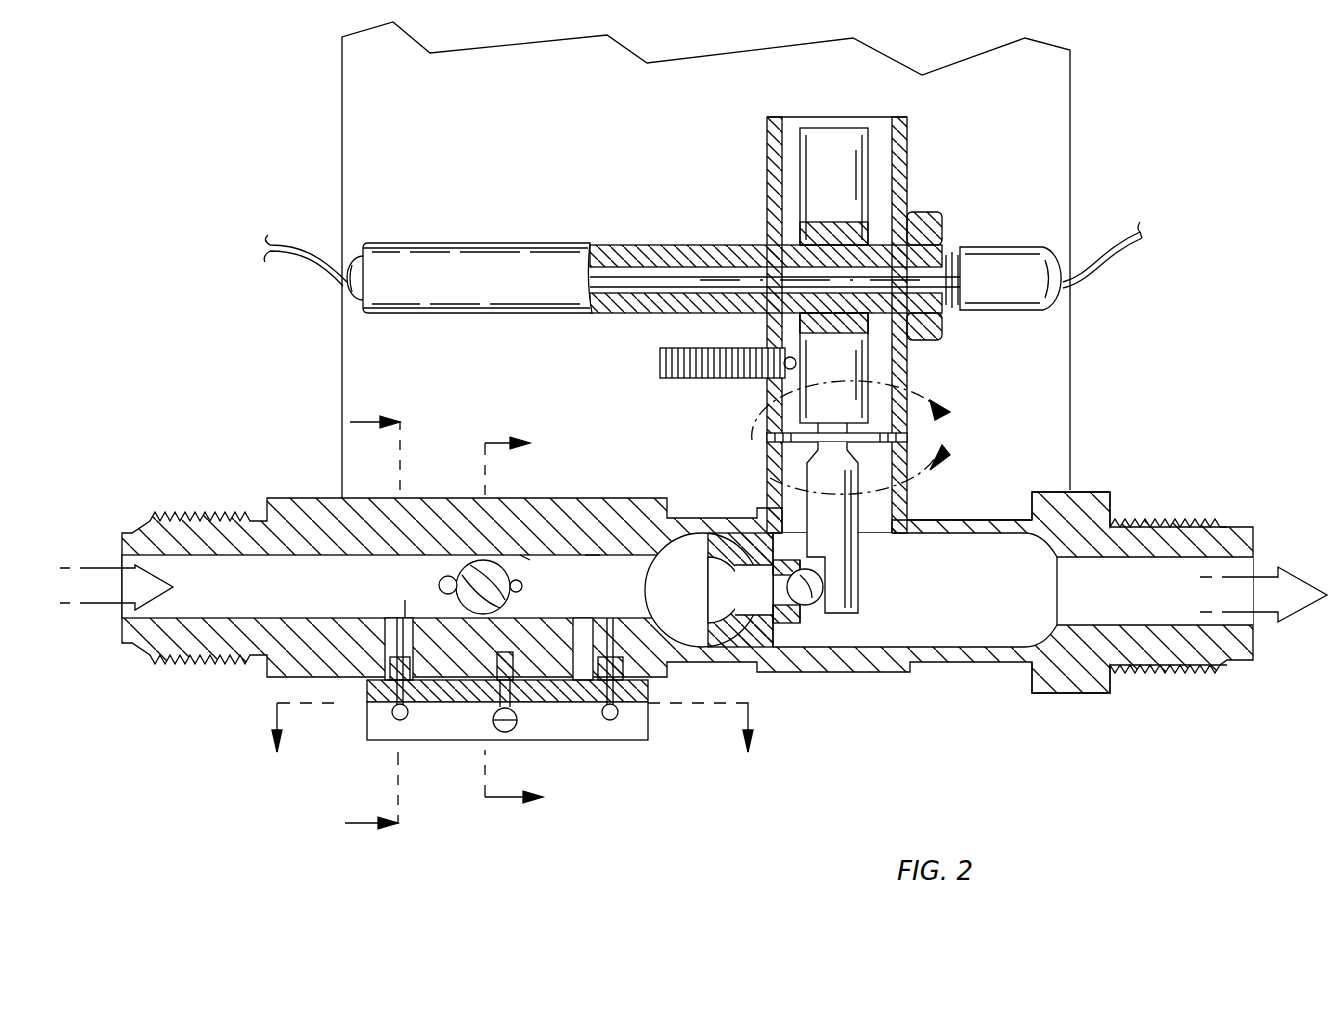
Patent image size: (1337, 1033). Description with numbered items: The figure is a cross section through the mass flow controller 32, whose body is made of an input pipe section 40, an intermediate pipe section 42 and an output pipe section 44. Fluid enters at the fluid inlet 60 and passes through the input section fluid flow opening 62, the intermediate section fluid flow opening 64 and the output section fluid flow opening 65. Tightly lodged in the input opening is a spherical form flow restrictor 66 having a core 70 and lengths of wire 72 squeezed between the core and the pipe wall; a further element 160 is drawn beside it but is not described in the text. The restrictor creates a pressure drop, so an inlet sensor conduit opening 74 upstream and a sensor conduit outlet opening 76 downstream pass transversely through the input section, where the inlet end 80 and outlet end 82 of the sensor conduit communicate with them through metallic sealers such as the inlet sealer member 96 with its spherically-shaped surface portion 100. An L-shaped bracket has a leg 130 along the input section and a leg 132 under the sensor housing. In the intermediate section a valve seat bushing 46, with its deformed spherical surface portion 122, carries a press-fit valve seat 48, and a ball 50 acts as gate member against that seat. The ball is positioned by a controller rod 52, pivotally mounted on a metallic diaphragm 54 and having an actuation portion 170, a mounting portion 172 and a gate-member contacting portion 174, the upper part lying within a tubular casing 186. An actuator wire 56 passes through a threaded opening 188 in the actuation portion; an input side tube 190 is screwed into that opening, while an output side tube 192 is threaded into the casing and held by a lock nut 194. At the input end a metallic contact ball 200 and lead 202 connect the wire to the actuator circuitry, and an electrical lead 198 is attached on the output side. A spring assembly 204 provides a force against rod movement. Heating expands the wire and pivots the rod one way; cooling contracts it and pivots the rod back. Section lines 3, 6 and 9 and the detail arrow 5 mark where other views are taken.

The mass flow controller 32 is at (1150, 352).
The input pipe section 40 is at (273, 670).
The intermediate pipe section 42 is at (947, 517).
The output pipe section 44 is at (1108, 682).
The valve seat bushing 46 is at (763, 640).
The valve seat 48 is at (800, 610).
The ball 50 is at (815, 583).
The controller rod 52 is at (858, 362).
The metallic diaphragm 54 is at (800, 428).
The actuator wire 56 is at (640, 273).
The fluid inlet 60 is at (122, 560).
The input section fluid flow opening 62 is at (593, 560).
The intermediate section fluid flow opening 64 is at (903, 636).
The output section fluid flow opening 65 is at (1193, 627).
The spherical form flow restrictor 66 is at (520, 560).
The core 70 is at (498, 588).
The lengths of wire 72 is at (495, 655).
The inlet sensor conduit opening 74 is at (390, 665).
The sensor conduit outlet opening 76 is at (578, 620).
The inlet end of sensor conduit 80 is at (407, 640).
The outlet end of sensor conduit 82 is at (647, 577).
The inlet sealer member 96 is at (377, 740).
The spherically-shaped surface portion 100 is at (640, 700).
The spherical surface portion 122 is at (740, 625).
The leg along input pipe section 130 is at (660, 693).
The leg under sensor housing 132 is at (527, 715).
The detent 160 is at (440, 585).
The actuation portion 170 is at (857, 178).
The mounting portion 172 is at (800, 470).
The gate-member contacting portion 174 is at (858, 560).
The tubular casing 186 is at (767, 177).
The threaded opening 188 is at (790, 248).
The tube 190 is at (427, 253).
The output side tube 192 is at (1023, 260).
The lock nut 194 is at (940, 213).
The lead wire 198 is at (1111, 264).
The metallic contact ball 200 is at (347, 282).
The lead 202 is at (287, 242).
The spring assembly 204 is at (678, 343).
The section line 3- 3 is at (513, 728).
The detail view 5 is at (858, 437).
The section line 6- 6 is at (514, 620).
The section line 9- 9 is at (372, 623).